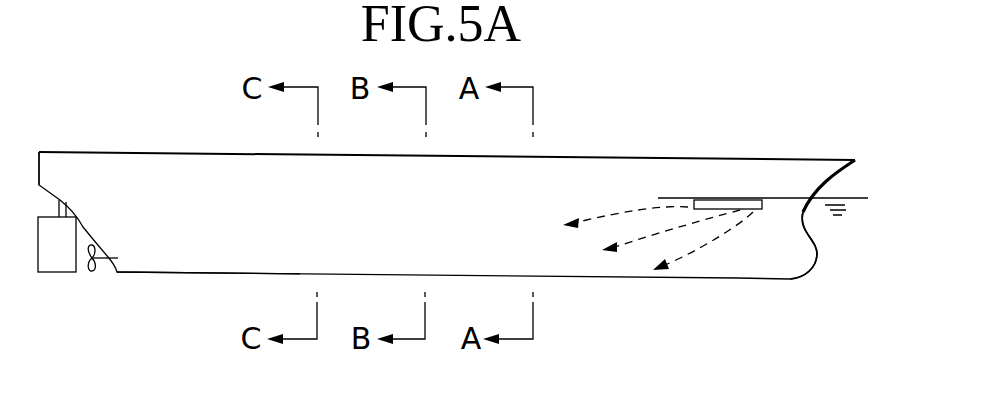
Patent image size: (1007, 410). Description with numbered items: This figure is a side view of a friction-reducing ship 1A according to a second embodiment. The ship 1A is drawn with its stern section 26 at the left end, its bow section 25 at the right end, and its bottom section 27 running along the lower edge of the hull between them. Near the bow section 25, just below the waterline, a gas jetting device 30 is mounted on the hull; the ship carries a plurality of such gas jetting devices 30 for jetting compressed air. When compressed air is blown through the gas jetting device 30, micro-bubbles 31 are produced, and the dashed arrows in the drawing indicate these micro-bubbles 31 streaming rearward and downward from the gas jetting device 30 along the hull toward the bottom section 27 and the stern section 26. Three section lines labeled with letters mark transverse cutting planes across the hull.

The ship 1A is at (599, 145).
The bow section 25 is at (782, 257).
The stern section 26 is at (123, 176).
The bottom section 27 is at (240, 275).
The gas jetting device 30 is at (753, 222).
The micro-bubbles 31 is at (632, 245).